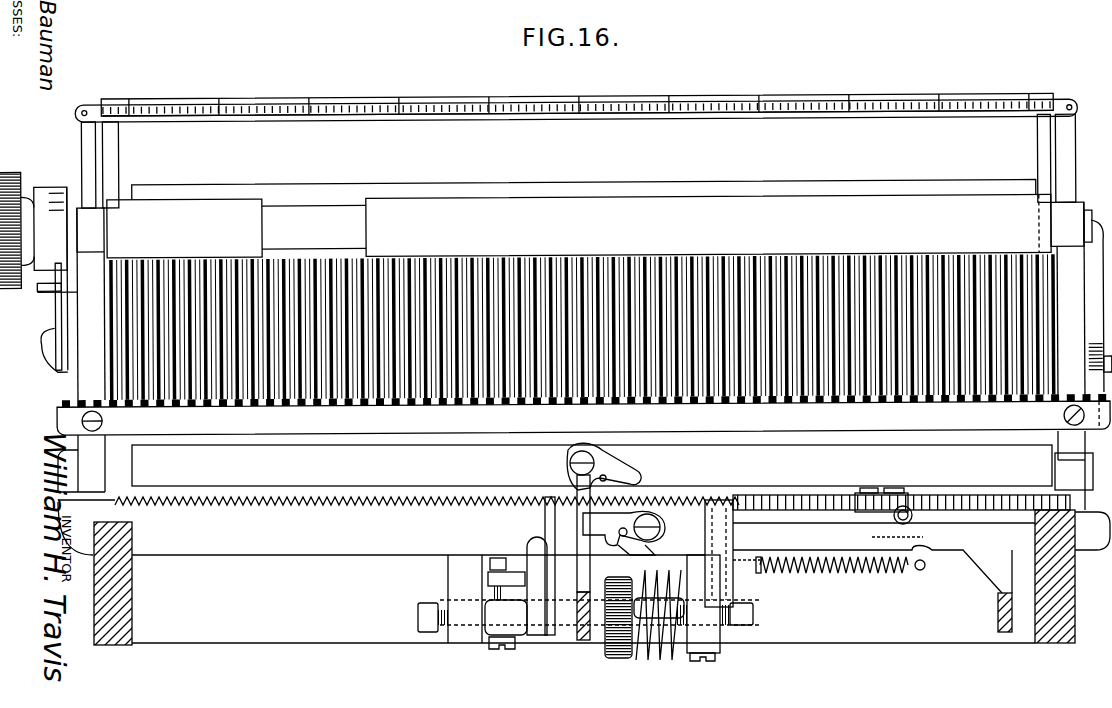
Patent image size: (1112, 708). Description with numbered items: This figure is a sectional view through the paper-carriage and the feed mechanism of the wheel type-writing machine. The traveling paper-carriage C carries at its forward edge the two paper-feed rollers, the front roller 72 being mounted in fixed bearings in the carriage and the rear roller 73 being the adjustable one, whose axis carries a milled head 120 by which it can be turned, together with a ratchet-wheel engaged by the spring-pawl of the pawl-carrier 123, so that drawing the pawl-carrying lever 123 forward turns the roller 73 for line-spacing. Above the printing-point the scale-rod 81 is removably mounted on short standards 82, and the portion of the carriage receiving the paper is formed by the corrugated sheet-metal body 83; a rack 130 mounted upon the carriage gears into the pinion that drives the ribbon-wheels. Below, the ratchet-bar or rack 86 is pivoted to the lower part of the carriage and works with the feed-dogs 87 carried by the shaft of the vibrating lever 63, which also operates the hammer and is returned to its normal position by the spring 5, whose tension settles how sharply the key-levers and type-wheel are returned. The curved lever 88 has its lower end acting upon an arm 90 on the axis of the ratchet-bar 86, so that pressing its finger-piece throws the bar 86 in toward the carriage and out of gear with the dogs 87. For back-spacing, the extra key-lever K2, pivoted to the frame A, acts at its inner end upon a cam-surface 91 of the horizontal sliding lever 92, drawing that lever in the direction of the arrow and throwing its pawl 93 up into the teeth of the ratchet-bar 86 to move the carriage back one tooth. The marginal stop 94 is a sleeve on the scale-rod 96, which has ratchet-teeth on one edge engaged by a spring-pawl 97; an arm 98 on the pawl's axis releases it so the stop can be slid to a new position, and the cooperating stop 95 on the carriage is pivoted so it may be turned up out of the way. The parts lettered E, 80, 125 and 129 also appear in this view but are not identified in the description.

The graduated scale bar E is at (150, 97).
The scale-rod 81 is at (250, 117).
The short standards 82 is at (577, 161).
The inner standard post 80 is at (576, 161).
The rear paper-feed roller 73 is at (584, 184).
The front paper-feed roller 72 is at (579, 226).
The sheet-metal body 83 is at (583, 319).
The rack 130 is at (583, 417).
The traveling paper-carriage C is at (581, 304).
The milled head 120 is at (34, 271).
The spring-pawl carrier 123 is at (91, 230).
The stop piece 125 is at (45, 316).
The hook bracket 129 is at (50, 357).
The curved lever 88 is at (1081, 297).
The ratchet-bar 86 is at (592, 465).
The arm 90 is at (1074, 471).
The scale-rod 96 is at (955, 495).
The marginal stop 94 is at (892, 493).
The arm 98 is at (870, 483).
The spring-pawl 97 is at (910, 508).
The horizontal sliding lever 92 is at (870, 553).
The cam-surface 91 is at (972, 561).
The extra key-lever K2 is at (997, 597).
The frame A is at (94, 602).
The vibrating lever 63 is at (589, 608).
The spring 5 is at (659, 609).
The feed-dogs 87 is at (548, 506).
The stop 95 is at (604, 517).
The pawl 93 is at (624, 533).